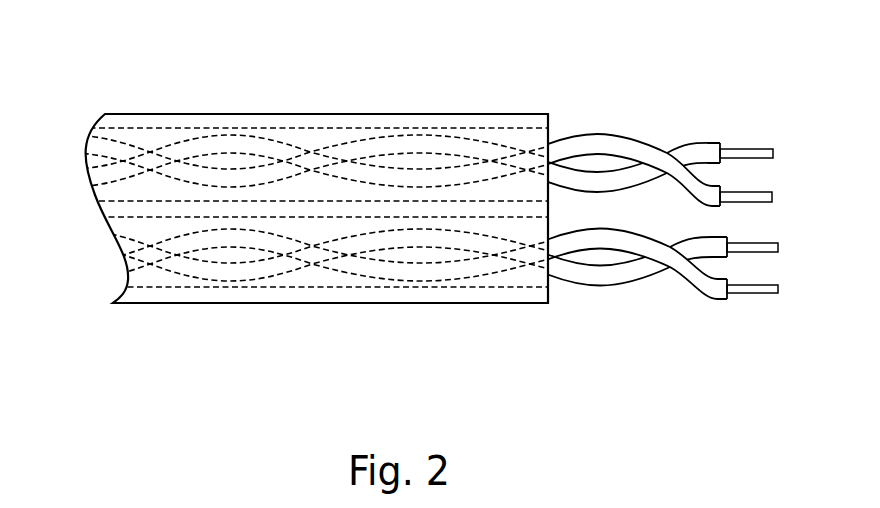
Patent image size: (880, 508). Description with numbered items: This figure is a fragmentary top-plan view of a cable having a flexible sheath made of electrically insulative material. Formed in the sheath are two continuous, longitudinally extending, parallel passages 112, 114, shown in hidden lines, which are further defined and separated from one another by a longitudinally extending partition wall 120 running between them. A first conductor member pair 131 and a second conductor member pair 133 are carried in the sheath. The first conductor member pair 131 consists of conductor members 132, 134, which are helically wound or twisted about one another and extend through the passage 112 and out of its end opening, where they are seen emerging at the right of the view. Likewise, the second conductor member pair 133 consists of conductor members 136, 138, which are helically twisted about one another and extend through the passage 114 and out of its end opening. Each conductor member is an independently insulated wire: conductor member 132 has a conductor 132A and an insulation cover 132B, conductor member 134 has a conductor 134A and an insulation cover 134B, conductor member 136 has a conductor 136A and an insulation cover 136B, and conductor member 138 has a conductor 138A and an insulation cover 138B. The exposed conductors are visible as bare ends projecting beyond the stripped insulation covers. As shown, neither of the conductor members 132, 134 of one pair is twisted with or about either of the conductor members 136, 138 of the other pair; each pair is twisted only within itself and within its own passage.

The passage 112 is at (165, 303).
The passage 114 is at (130, 128).
The partition wall 120 is at (128, 212).
The first conductor member pair 131 is at (654, 324).
The conductor member 132 is at (245, 270).
The conductor 132A is at (748, 245).
The insulation cover 132B is at (603, 273).
The second conductor member pair 133 is at (669, 109).
The conductor member 134 is at (438, 272).
The conductor 134A is at (750, 327).
The insulation cover 134B is at (696, 280).
The conductor member 136 is at (241, 143).
The conductor 136A is at (754, 193).
The insulation cover 136B is at (628, 152).
The conductor member 138 is at (425, 143).
The conductor 138A is at (752, 147).
The insulation cover 138B is at (574, 176).